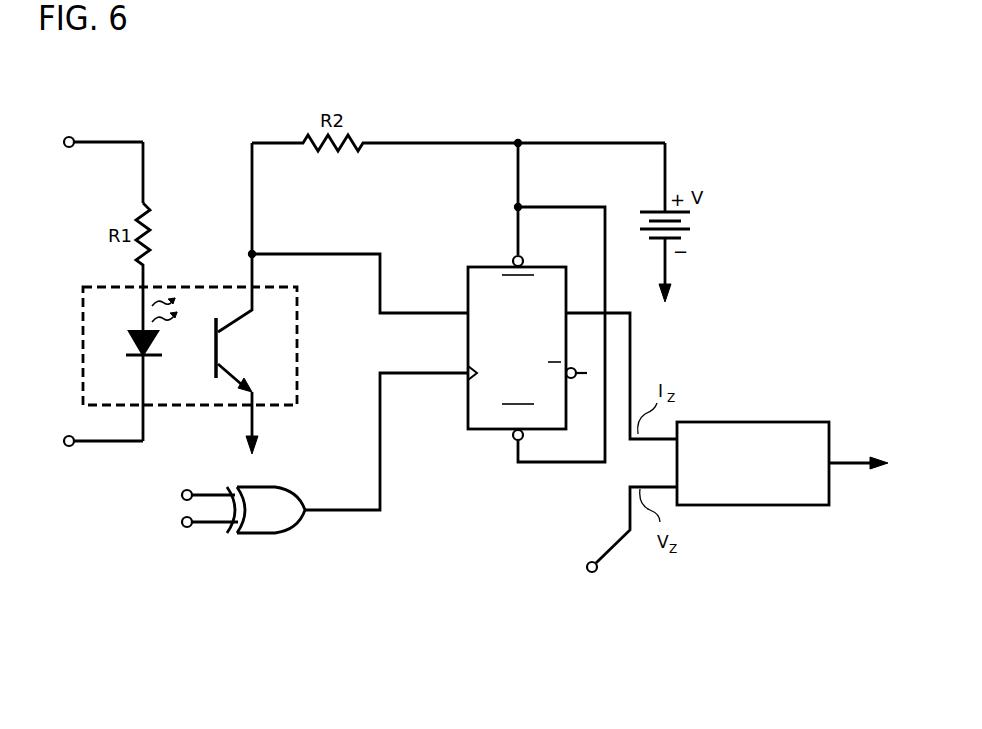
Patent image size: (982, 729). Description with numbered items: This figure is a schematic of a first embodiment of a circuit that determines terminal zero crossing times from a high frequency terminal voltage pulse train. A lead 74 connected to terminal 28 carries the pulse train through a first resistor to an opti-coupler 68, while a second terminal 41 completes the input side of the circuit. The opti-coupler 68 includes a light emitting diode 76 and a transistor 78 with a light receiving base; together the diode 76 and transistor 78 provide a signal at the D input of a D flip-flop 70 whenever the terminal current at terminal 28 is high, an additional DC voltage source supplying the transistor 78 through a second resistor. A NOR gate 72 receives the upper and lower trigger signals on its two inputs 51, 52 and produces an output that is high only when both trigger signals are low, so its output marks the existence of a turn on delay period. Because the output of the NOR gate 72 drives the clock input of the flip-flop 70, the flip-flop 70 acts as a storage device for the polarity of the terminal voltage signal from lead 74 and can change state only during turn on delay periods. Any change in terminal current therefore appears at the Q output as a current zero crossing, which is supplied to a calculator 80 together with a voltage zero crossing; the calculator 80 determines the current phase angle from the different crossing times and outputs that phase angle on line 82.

The terminal 28 is at (84, 140).
The lead 74 is at (137, 140).
The light emitting diode 76 is at (131, 339).
The transistor 78 is at (229, 332).
The opti-coupler 68 is at (299, 391).
The return terminal 41 is at (75, 448).
The first input signal terminal 51 is at (216, 492).
The second input signal terminal 52 is at (216, 527).
The NOR gate 72 is at (292, 490).
The D flip-flop 70 is at (485, 266).
The calculator 80 is at (737, 422).
The line 82 is at (841, 460).